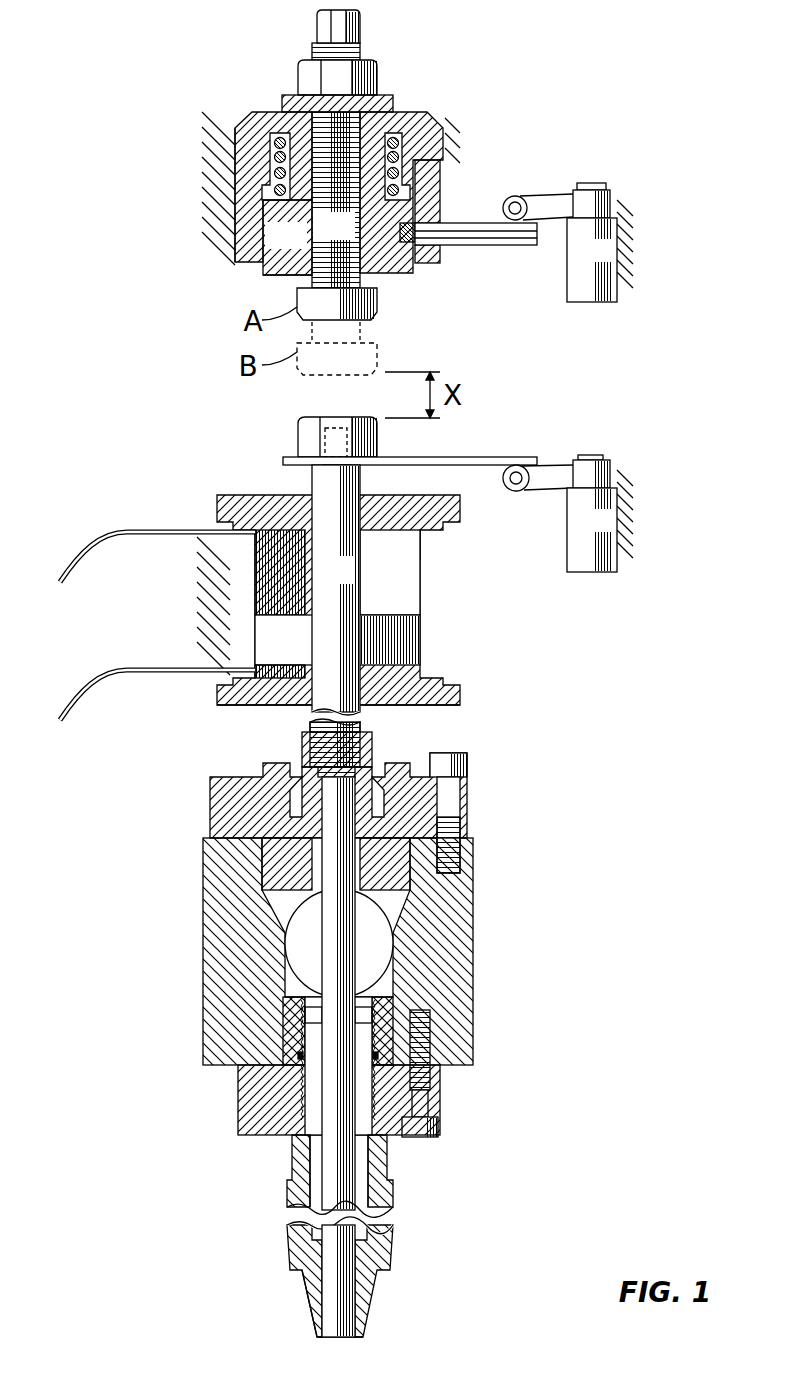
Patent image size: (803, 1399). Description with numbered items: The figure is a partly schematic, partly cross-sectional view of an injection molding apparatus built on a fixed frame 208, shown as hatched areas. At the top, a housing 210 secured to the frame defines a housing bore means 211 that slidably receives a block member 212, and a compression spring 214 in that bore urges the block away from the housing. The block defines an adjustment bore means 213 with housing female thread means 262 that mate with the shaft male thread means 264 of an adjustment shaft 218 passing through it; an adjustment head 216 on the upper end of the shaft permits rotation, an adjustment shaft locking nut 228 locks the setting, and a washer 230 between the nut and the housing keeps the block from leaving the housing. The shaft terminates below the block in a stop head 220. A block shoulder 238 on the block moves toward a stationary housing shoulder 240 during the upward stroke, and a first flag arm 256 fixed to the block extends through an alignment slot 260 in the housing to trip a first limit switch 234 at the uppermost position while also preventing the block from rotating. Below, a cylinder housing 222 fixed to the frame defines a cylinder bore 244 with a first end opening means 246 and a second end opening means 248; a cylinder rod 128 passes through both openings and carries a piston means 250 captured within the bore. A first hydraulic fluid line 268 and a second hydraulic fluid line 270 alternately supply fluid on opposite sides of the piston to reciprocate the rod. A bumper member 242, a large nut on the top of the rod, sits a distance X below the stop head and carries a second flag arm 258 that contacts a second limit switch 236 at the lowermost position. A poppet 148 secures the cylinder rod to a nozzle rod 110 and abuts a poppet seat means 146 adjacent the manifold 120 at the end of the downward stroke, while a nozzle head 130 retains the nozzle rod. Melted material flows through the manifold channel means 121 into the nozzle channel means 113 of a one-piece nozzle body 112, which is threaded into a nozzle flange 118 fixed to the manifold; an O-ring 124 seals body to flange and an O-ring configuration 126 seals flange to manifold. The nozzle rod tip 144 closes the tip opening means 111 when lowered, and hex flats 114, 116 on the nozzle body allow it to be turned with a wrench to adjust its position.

The nozzle rod 110 is at (327, 1192).
The tip opening means 111 is at (320, 1338).
The nozzle body 112 is at (293, 1250).
The nozzle channel means 113 is at (313, 1167).
The hex flat 114 is at (303, 1283).
The hex flat 116 is at (387, 1167).
The nozzle flange 118 is at (240, 1093).
The manifold 120 is at (222, 1017).
The manifold channel means 121 is at (392, 988).
The O-ring 124 is at (300, 1137).
The O-ring configuration 126 is at (262, 1000).
The cylinder rod 128 is at (333, 590).
The nozzle head 130 is at (370, 773).
The nozzle rod tip 144 is at (360, 1340).
The poppet seat means 146 is at (285, 790).
The poppet 148 is at (305, 745).
The frame 208 is at (205, 197).
The housing 210 is at (250, 120).
The housing bore means 211 is at (230, 172).
The block member 212 is at (285, 237).
The adjustment bore means 213 is at (286, 272).
The compression spring 214 is at (420, 140).
The adjustment head 216 is at (360, 28).
The adjustment shaft 218 is at (333, 200).
The stop head 220 is at (380, 305).
The cylinder housing 222 is at (285, 505).
The adjustment shaft locking nut 228 is at (372, 75).
The washer 230 is at (395, 100).
The first limit switch 234 is at (590, 242).
The second limit switch 236 is at (560, 513).
The block shoulder 238 is at (437, 197).
The housing shoulder 240 is at (415, 162).
The bumper member 242 is at (300, 435).
The cylinder bore 244 is at (412, 585).
The first end opening means 246 is at (420, 543).
The second end opening means 248 is at (362, 695).
The piston means 250 is at (410, 643).
The first flag arm 256 is at (510, 243).
The second flag arm 258 is at (480, 458).
The alignment slot 260 is at (443, 250).
The housing female thread means 262 is at (290, 135).
The shaft male thread means 264 is at (400, 120).
The first hydraulic fluid line 268 is at (166, 676).
The second hydraulic fluid line 270 is at (150, 528).